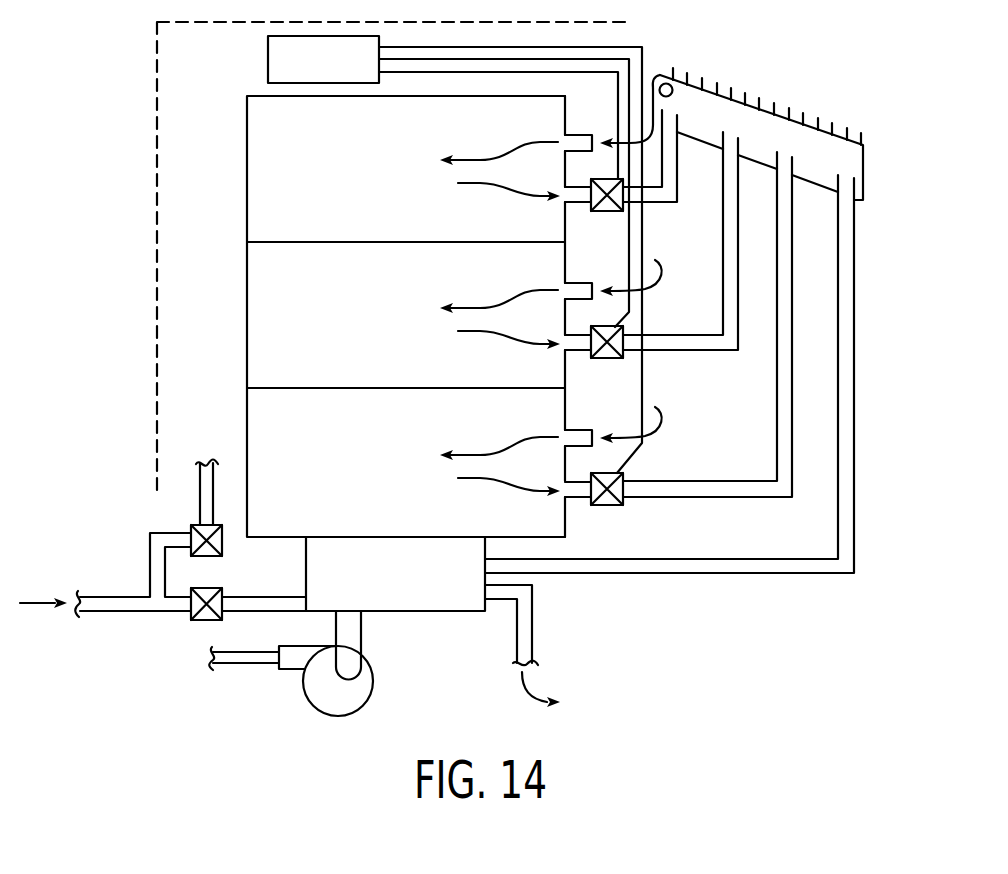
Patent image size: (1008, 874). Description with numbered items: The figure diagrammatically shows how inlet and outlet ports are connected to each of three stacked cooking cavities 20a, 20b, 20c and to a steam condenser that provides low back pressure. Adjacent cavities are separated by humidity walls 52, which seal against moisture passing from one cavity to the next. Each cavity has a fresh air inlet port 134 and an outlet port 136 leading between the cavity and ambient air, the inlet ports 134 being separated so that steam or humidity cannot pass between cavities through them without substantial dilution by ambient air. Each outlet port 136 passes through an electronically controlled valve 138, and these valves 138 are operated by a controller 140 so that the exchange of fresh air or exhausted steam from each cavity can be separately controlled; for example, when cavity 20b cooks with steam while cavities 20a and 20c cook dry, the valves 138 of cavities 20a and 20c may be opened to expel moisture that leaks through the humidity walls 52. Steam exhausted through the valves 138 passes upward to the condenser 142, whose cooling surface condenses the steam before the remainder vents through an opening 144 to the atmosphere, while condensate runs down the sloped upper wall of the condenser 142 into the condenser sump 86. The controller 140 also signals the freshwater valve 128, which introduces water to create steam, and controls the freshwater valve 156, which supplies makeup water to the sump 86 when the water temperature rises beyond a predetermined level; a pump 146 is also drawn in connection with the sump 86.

The controller 140 is at (268, 58).
The humidity wall 52 is at (281, 242).
The cavity 20a is at (329, 185).
The cavity 20b is at (329, 332).
The cavity 20c is at (329, 479).
The fresh air inlet port 134 is at (578, 135).
The outlet port 136 is at (576, 202).
The electronically controlled valve 138 is at (608, 211).
The condenser 142 is at (863, 172).
The opening 144 is at (663, 84).
The condenser sump 86 is at (411, 587).
The freshwater valve 128 is at (192, 524).
The freshwater valve 156 is at (207, 621).
The pump 146 is at (328, 715).